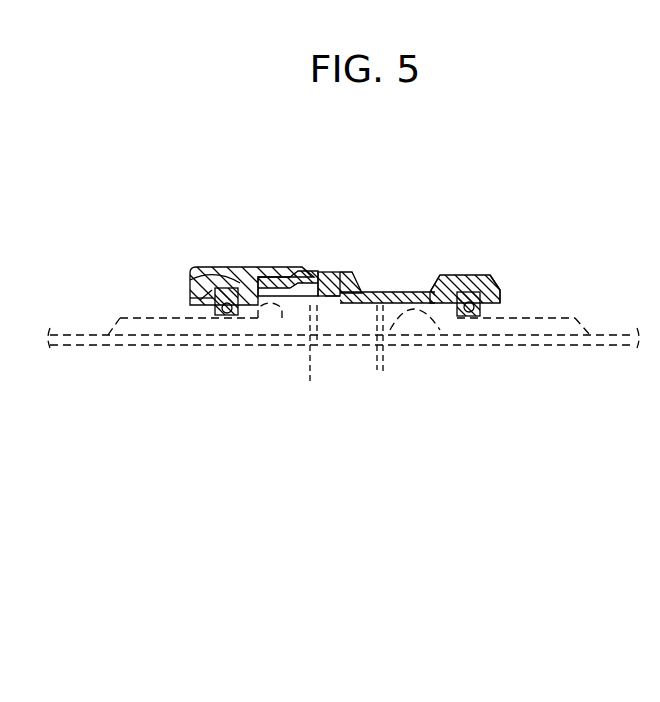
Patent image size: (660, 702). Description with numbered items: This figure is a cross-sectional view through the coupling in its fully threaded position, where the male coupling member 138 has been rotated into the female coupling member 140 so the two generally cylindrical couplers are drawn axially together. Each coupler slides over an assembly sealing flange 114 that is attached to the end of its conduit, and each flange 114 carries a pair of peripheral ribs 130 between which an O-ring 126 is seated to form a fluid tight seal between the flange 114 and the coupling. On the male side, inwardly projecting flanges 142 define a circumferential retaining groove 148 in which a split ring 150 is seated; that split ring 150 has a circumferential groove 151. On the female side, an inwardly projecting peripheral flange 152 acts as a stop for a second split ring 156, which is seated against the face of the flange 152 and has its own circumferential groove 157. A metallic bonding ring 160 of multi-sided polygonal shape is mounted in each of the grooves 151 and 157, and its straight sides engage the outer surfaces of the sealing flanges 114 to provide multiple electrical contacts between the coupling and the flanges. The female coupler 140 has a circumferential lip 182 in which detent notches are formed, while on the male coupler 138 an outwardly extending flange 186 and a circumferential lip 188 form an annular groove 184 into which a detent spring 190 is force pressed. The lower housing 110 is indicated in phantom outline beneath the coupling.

The lower housing (phantom) 110 is at (78, 350).
The assembly sealing flange 114 is at (160, 313).
The O-ring 126 is at (410, 318).
The peripheral ribs 130 is at (245, 320).
The male coupling member 138 is at (475, 285).
The female coupling member 140 is at (242, 265).
The inwardly projecting flanges 142 is at (463, 274).
The circumferential retaining groove 148 is at (490, 282).
The split ring 150 is at (482, 305).
The circumferential groove 151 is at (506, 292).
The inwardly projecting peripheral flange 152 is at (213, 293).
The split ring 156 is at (225, 293).
The circumferential groove 157 is at (238, 280).
The metallic bonding ring 160 is at (226, 318).
The circumferential lip 182 is at (313, 270).
The annular groove 184 is at (293, 305).
The outwardly extending flange 186 is at (354, 286).
The circumferential lip 188 is at (330, 275).
The detent spring 190 is at (334, 298).